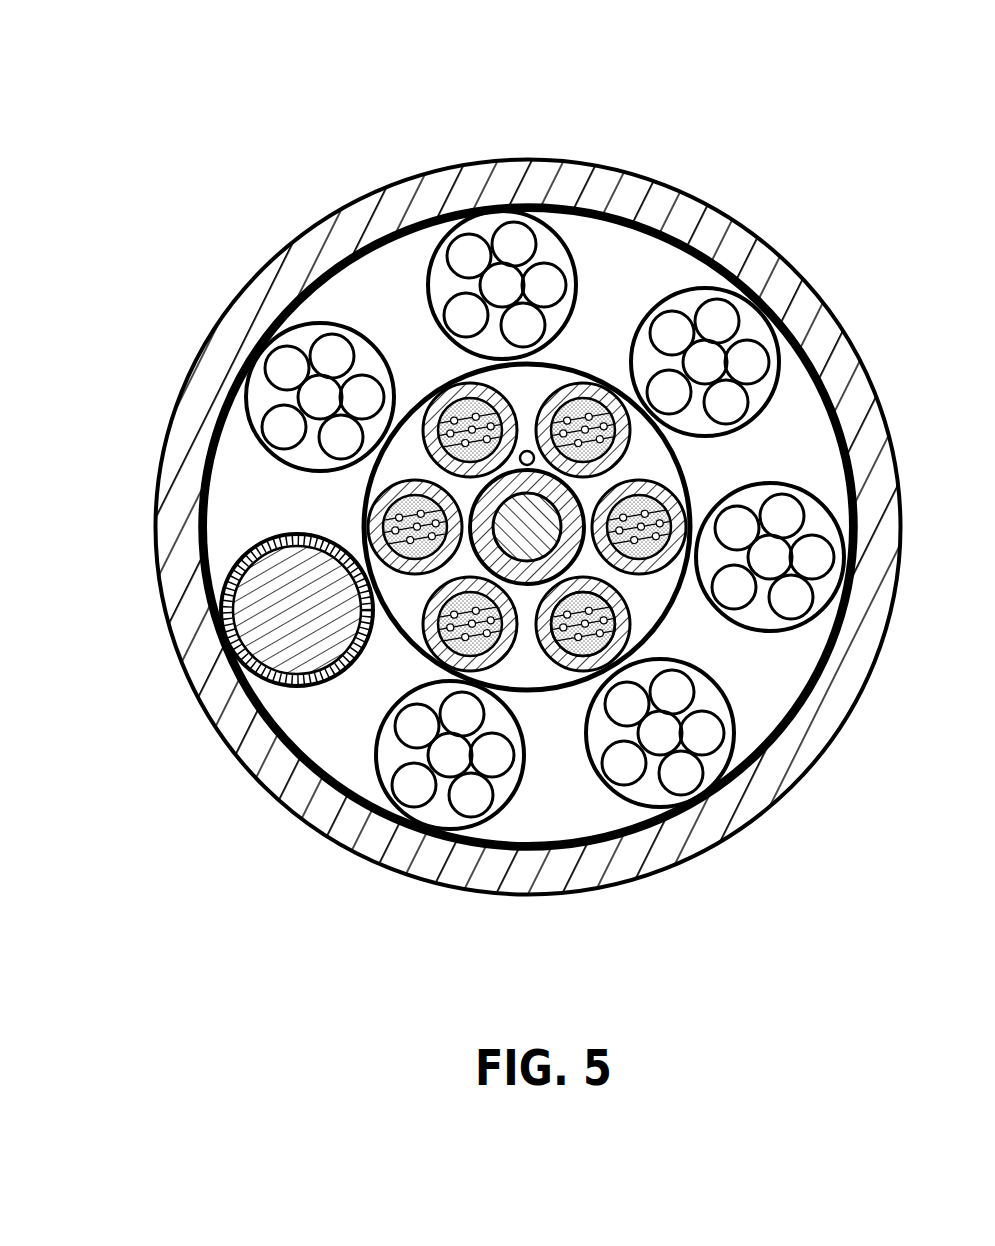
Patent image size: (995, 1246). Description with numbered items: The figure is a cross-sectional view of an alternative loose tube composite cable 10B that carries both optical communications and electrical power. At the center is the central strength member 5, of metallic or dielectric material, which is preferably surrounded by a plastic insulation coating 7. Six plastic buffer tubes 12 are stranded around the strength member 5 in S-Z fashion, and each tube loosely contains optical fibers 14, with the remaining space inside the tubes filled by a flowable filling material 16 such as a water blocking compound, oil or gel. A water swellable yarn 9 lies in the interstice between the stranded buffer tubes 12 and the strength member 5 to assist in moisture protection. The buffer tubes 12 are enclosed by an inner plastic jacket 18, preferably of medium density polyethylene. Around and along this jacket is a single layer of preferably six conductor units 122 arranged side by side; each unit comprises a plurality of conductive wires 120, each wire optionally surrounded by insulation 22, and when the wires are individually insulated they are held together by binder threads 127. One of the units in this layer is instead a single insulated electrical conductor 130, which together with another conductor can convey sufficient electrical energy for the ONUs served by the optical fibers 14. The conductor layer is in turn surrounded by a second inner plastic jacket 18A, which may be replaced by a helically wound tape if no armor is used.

The loose tube composite cable 10B is at (380, 140).
The second inner plastic jacket 18A is at (512, 852).
The conductor units 122 is at (330, 797).
The binder threads 127 is at (340, 308).
The conductive wires 120 is at (275, 425).
The insulation 22 is at (410, 770).
The single insulated electrical conductor 130 is at (225, 614).
The inner plastic jacket 18 is at (685, 465).
The buffer tubes 12 is at (587, 383).
The optical fibers 14 is at (557, 662).
The flowable filling material 16 is at (593, 627).
The plastic insulation coating 7 is at (500, 572).
The central strength member 5 is at (565, 512).
The water swellable yarn 9 is at (529, 451).